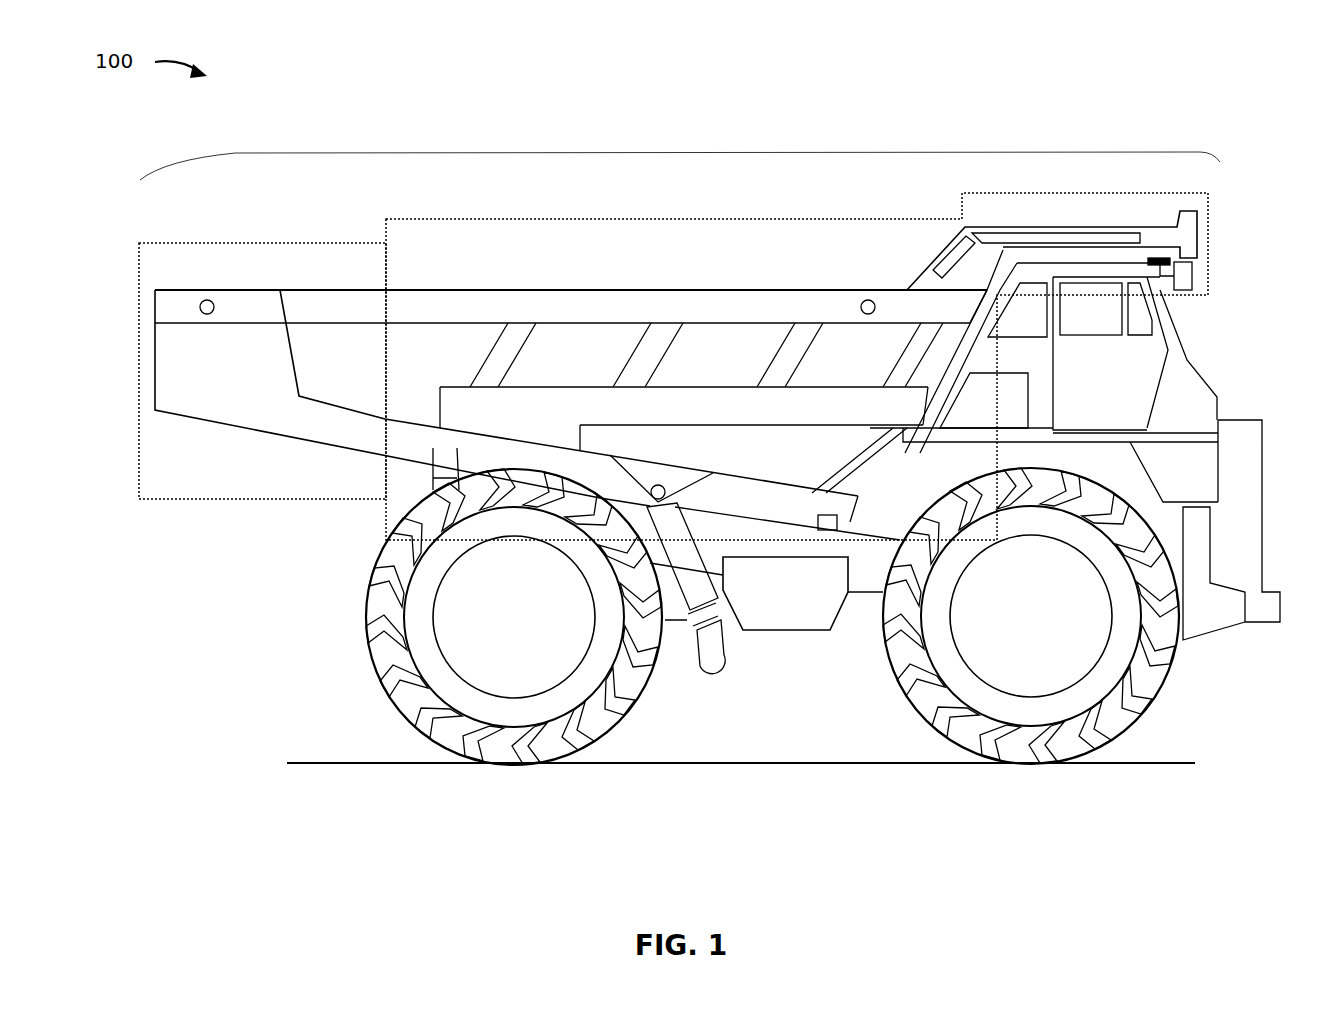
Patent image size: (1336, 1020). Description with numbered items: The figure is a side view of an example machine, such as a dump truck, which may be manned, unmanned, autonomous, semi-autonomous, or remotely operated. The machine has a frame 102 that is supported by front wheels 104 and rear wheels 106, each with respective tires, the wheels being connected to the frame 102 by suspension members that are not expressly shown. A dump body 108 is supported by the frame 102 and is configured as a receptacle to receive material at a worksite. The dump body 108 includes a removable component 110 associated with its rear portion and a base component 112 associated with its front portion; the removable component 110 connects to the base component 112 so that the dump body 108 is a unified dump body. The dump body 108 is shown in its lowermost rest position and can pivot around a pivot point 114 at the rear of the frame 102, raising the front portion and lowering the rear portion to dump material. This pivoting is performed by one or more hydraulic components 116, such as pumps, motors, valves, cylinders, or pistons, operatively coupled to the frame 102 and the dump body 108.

The frame 102 is at (868, 576).
The front wheels 104 is at (1024, 619).
The rear wheels 106 is at (511, 623).
The dump body 108 is at (674, 152).
The removable component 110 is at (250, 368).
The base component 112 is at (736, 501).
The pivot point 114 is at (449, 467).
The hydraulic components 116 is at (689, 599).